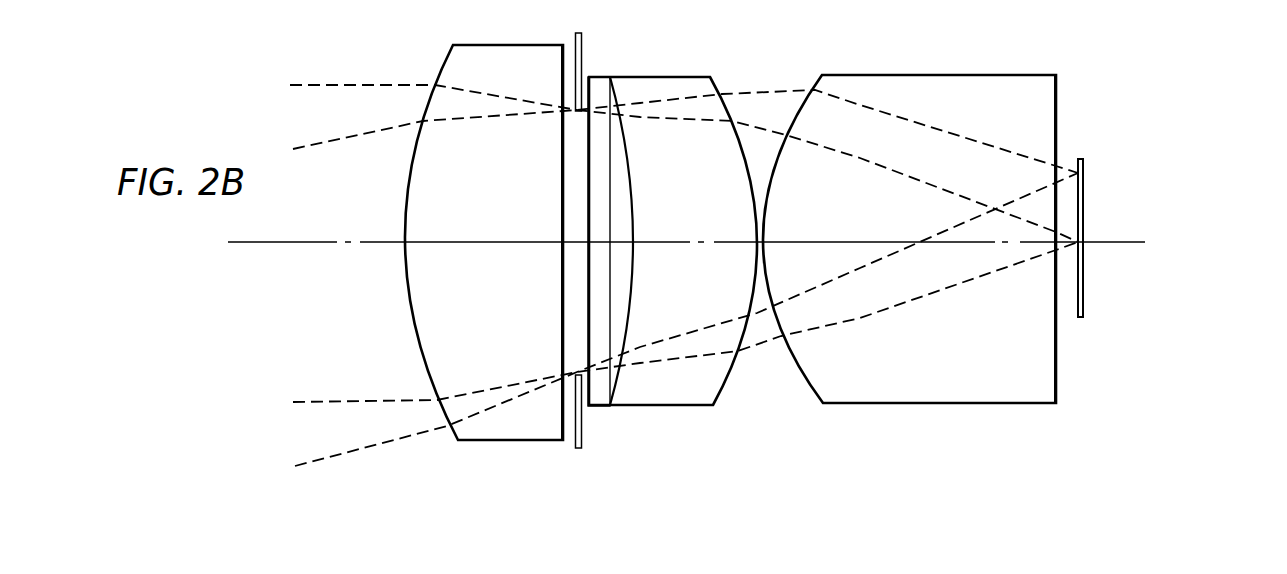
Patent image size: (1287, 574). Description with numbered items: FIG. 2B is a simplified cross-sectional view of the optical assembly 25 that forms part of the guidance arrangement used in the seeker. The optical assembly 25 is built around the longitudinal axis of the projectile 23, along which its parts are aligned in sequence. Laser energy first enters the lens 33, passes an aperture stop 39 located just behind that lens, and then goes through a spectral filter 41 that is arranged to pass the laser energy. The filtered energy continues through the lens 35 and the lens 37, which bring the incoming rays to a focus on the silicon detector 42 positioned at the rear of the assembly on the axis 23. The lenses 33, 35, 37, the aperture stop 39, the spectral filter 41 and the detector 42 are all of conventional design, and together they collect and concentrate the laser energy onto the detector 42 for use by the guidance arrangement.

The longitudinal axis of projectile 23 is at (241, 243).
The optical assembly 25 is at (757, 59).
The lens 33 is at (484, 223).
The lens 35 is at (702, 210).
The lens 37 is at (905, 217).
The aperture stop 39 is at (578, 450).
The spectral filter 41 is at (601, 406).
The detector 42 is at (1083, 194).